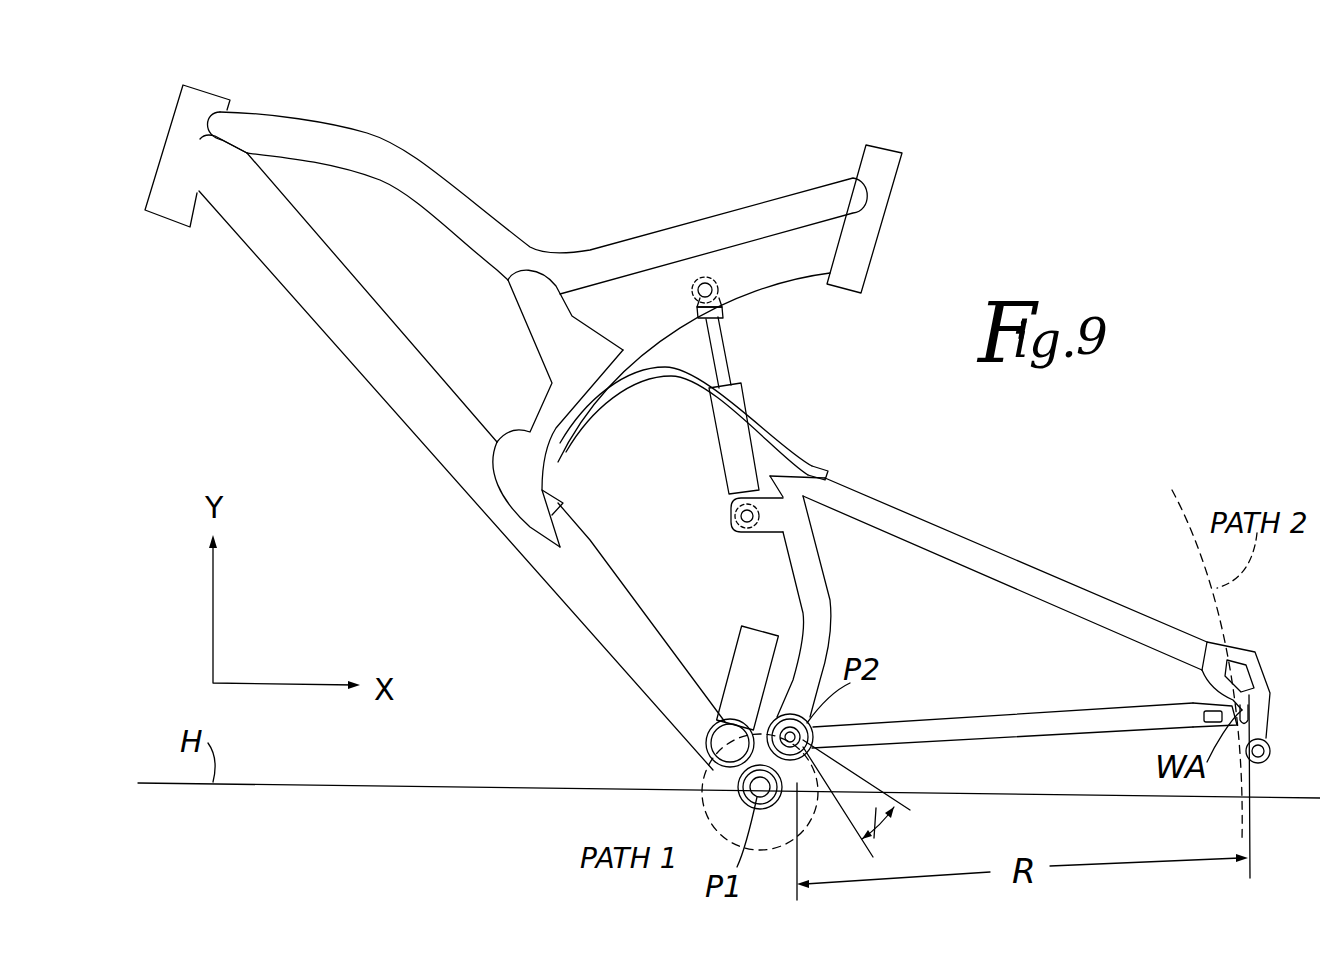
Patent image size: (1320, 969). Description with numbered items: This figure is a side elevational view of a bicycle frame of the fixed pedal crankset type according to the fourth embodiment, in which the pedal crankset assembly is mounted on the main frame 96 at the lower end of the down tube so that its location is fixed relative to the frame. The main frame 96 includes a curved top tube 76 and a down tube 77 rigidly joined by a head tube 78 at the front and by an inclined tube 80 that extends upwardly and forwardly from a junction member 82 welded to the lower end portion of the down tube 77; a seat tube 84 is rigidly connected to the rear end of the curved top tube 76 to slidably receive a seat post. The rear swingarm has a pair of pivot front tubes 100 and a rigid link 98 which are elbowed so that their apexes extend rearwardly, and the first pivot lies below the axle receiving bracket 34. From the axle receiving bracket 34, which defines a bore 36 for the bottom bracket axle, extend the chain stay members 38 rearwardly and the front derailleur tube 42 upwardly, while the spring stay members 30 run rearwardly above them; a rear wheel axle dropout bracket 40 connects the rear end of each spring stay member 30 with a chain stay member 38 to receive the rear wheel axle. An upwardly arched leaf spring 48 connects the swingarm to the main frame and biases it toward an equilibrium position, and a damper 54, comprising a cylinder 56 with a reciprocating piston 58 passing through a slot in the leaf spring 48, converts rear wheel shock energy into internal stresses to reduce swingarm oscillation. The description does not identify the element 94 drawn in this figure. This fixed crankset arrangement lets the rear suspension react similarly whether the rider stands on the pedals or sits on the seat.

The spring stay members 30 is at (1061, 586).
The axle receiving bracket 34 is at (727, 743).
The bore 36 is at (712, 768).
The chain stay members 38 is at (1023, 727).
The rear wheel axle dropout bracket 40 is at (1260, 697).
The front derailleur tube 42 is at (747, 655).
The leaf spring 48 is at (790, 447).
The damper 54 is at (757, 367).
The cylinder 56 is at (752, 397).
The reciprocating piston 58 is at (723, 340).
The curved top tube 76 is at (457, 217).
The down tube 77 is at (417, 437).
The head tube 78 is at (160, 140).
The inclined tube 80 is at (525, 313).
The junction member 82 is at (528, 430).
The seat tube 84 is at (880, 237).
The front frame section 94 is at (785, 133).
The main frame 96 is at (582, 228).
The rigid link 98 is at (797, 773).
The pivot front tubes 100 is at (830, 604).